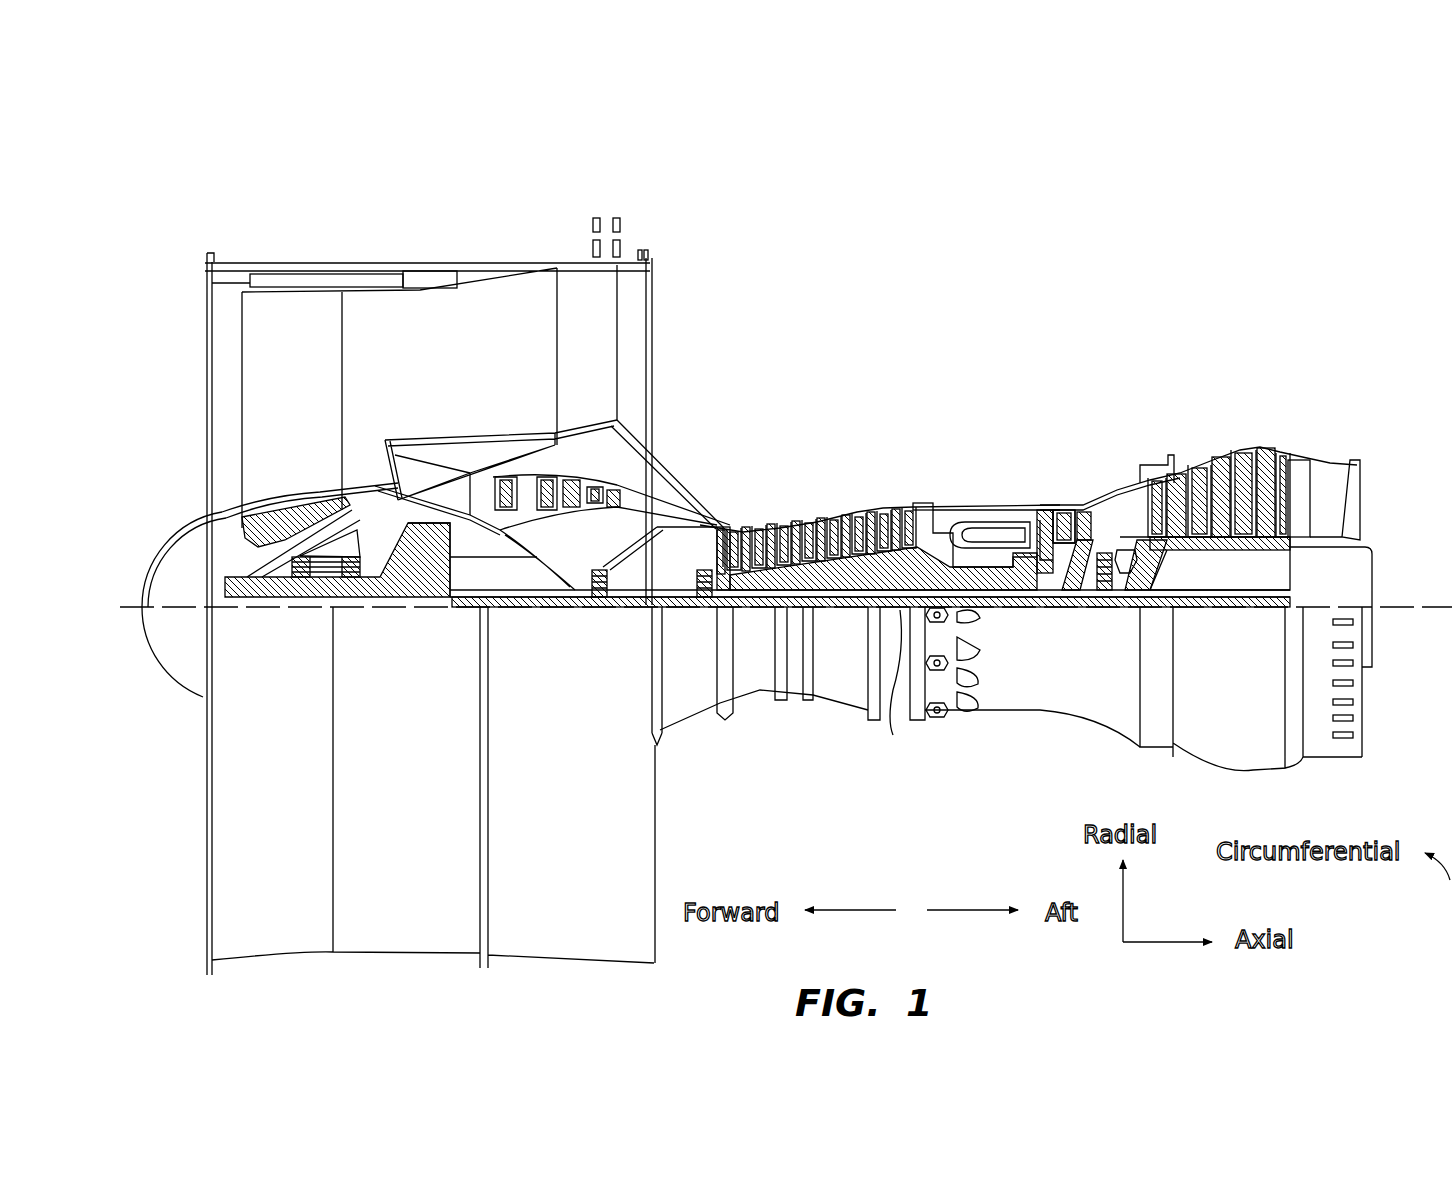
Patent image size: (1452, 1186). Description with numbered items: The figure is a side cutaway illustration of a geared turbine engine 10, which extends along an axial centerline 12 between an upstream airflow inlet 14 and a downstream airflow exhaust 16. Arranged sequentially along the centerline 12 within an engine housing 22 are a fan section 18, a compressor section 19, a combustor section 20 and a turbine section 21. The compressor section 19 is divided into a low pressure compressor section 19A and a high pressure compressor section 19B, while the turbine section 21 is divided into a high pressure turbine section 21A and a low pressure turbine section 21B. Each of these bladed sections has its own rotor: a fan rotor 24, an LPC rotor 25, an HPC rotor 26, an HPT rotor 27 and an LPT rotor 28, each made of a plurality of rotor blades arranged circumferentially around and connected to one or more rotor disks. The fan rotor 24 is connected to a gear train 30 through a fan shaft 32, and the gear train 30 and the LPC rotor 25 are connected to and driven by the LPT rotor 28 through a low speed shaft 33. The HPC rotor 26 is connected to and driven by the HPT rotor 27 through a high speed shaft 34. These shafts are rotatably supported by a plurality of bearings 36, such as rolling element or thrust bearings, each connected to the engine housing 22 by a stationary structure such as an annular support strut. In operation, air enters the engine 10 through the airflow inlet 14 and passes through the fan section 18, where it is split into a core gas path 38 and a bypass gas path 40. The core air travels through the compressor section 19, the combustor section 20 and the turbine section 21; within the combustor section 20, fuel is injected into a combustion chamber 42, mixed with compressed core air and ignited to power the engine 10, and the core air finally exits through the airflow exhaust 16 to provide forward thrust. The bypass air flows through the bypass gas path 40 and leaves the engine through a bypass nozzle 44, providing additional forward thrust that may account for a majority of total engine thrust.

The geared turbine engine 10 is at (170, 240).
The axial centerline 12 is at (1425, 622).
The upstream airflow inlet 14 is at (204, 343).
The downstream airflow exhaust 16 is at (1362, 490).
The fan section 18 is at (392, 235).
The compressor section 19 is at (473, 172).
The low pressure compressor (LPC) section 19A is at (652, 220).
The high pressure compressor (HPC) section 19B is at (893, 430).
The combustor section 20 is at (915, 427).
The turbine section 21 is at (1035, 353).
The high pressure turbine (HPT) section 21A is at (1118, 427).
The low pressure turbine (LPT) section 21B is at (1317, 427).
The engine housing 22 is at (678, 733).
The fan rotor 24 is at (208, 513).
The LPC rotor 25 is at (552, 590).
The HPC rotor 26 is at (842, 596).
The HPT rotor 27 is at (1080, 600).
The LPT rotor 28 is at (1220, 567).
The gear train 30 is at (432, 610).
The fan shaft 32 is at (286, 617).
The low speed shaft 33 is at (900, 685).
The high speed shaft 34 is at (995, 600).
The bearings 36 is at (298, 637).
The core gas path 38 is at (688, 527).
The bypass gas path 40 is at (455, 361).
The combustion chamber 42 is at (985, 535).
The bypass nozzle 44 is at (652, 322).